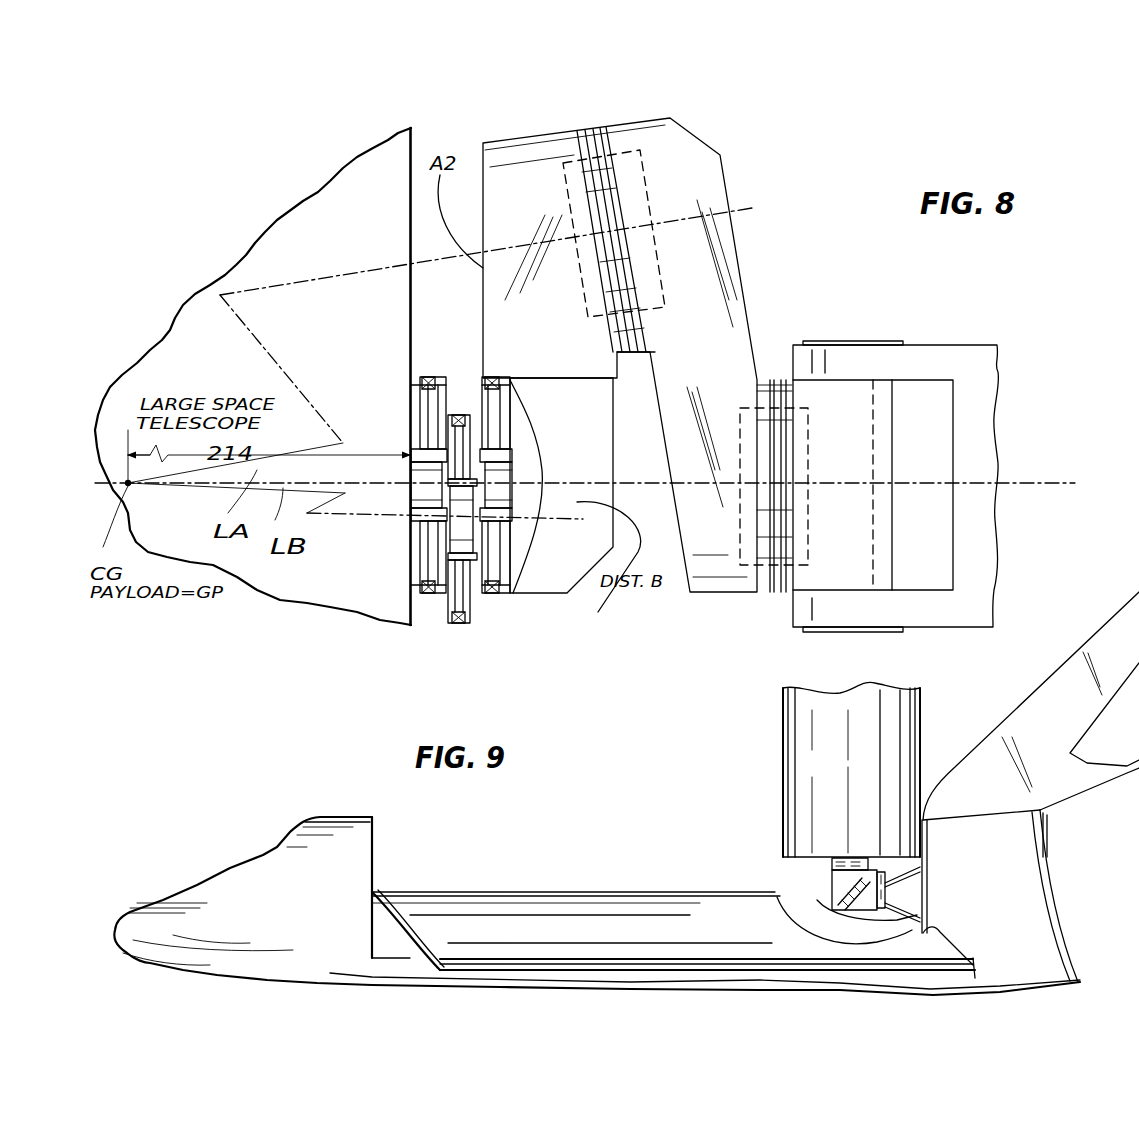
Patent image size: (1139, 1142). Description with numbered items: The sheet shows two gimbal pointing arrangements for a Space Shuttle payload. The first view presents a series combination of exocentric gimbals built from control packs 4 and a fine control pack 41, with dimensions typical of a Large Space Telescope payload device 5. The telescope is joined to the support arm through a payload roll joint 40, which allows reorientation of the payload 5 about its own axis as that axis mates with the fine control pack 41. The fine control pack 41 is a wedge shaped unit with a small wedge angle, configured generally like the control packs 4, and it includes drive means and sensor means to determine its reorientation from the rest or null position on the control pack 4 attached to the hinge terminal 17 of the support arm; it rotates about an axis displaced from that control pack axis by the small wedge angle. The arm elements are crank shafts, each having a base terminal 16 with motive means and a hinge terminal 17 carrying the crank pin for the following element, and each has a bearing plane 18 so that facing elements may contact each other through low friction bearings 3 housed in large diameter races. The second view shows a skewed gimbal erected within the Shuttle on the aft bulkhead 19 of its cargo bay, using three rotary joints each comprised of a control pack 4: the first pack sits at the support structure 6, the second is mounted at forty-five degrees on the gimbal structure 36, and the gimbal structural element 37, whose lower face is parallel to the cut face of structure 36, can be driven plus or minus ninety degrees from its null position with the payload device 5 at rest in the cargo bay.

In FIG. 8, the low friction bearings 3 is at (427, 377).
In FIG. 8, the control pack 4 is at (633, 192).
In FIG. 9, the control pack 4 is at (822, 868).
In FIG. 9, the payload device 5 is at (770, 745).
In FIG. 9, the support structure 6 is at (903, 923).
In FIG. 8, the base terminal 16 is at (500, 140).
In FIG. 8, the hinge terminal 17 is at (649, 116).
In FIG. 8, the bearing plane 18 is at (447, 400).
In FIG. 9, the aft bulkhead 19 is at (933, 898).
In FIG. 9, the gimbal structure 36 is at (853, 913).
In FIG. 9, the gimbal structural element 37 is at (830, 878).
In FIG. 8, the payload roll joint 40 is at (409, 558).
In FIG. 8, the fine control pack 41 is at (598, 612).